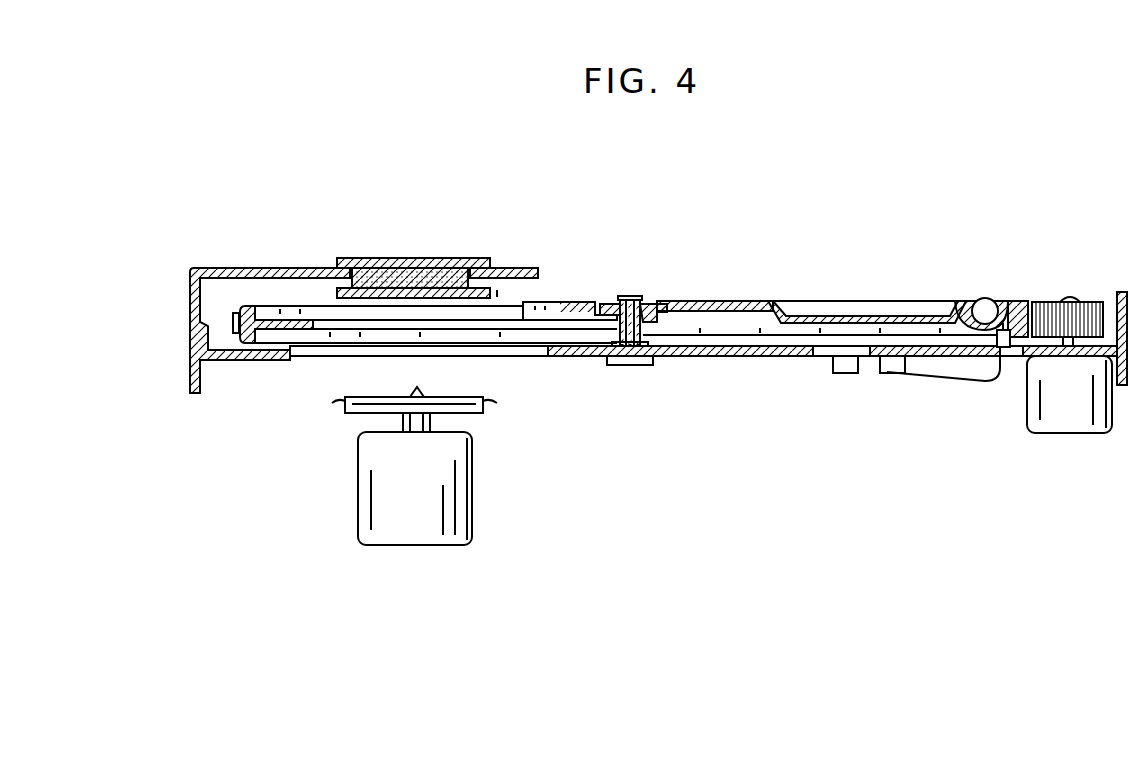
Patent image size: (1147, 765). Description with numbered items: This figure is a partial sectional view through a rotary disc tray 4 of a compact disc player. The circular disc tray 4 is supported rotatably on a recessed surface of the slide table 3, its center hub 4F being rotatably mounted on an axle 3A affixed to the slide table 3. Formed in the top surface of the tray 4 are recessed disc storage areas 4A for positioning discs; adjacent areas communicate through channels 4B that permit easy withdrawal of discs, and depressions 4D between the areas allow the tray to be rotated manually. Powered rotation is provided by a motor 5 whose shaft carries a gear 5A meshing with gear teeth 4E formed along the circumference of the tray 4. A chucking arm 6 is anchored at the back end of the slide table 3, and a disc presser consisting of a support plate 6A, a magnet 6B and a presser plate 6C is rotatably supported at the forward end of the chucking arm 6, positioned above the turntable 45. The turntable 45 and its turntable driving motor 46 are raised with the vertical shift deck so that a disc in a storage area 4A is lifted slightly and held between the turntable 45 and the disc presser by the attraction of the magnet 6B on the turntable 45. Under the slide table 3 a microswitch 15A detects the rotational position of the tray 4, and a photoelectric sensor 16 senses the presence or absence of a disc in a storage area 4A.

The slide table 3 is at (710, 357).
The axle 3A is at (628, 366).
The rotary disc tray 4 is at (728, 301).
The disc storage areas 4A is at (508, 315).
The channels 4B is at (812, 316).
The depressions 4D is at (985, 312).
The gear teeth 4E is at (1028, 302).
The center hub 4F is at (650, 304).
The motor 5 is at (1056, 420).
The gear 5A is at (1095, 302).
The chucking arm 6 is at (262, 268).
The support plate 6A is at (400, 258).
The magnet 6B is at (458, 268).
The presser plate 6C is at (492, 290).
The microswitch 15A is at (886, 374).
The photoelectric sensor 16 is at (836, 374).
The turntable 45 is at (465, 397).
The turntable driving motor 46 is at (360, 487).